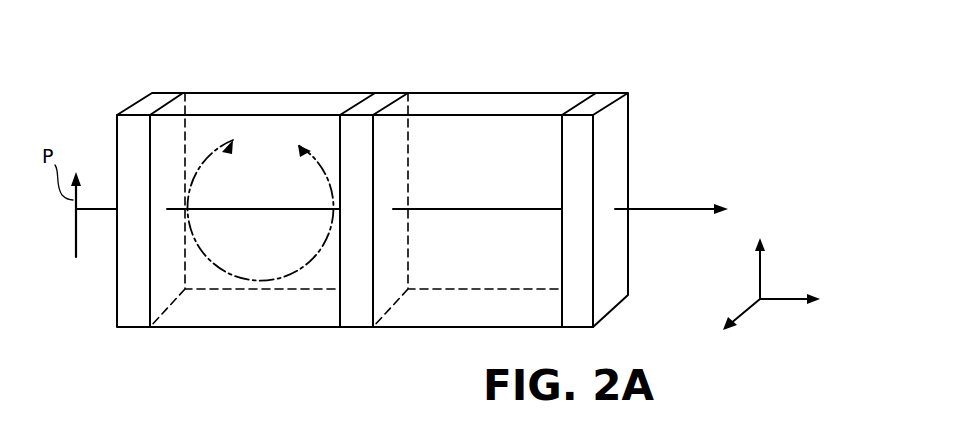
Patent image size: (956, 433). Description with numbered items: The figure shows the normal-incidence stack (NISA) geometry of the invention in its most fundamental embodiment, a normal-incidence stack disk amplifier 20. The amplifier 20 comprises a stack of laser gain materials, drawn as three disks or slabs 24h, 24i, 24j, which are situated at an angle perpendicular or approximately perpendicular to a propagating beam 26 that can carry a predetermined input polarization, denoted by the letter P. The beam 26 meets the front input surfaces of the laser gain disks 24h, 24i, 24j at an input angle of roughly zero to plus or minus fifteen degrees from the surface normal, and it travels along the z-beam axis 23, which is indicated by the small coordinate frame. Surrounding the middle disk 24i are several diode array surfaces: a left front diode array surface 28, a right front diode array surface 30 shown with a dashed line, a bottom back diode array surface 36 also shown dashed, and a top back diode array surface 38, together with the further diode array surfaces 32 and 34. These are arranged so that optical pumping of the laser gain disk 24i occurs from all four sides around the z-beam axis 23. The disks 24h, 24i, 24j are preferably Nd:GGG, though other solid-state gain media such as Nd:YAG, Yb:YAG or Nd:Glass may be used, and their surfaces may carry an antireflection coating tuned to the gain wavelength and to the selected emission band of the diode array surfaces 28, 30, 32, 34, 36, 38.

The normal-incidence stack disk amplifier 20 is at (690, 127).
The z-beam axis 23 is at (772, 300).
The laser gain disk 24h is at (142, 105).
The laser gain disk 24i is at (370, 102).
The laser gain disk 24j is at (606, 95).
The propagating beam 26 is at (675, 207).
The left front diode array surface 28 is at (215, 267).
The right front diode array surface 30 is at (283, 250).
The diode array surface 32 is at (308, 311).
The diode array surface 34 is at (252, 103).
The bottom back diode array surface 36 is at (478, 255).
The top back diode array surface 38 is at (483, 103).